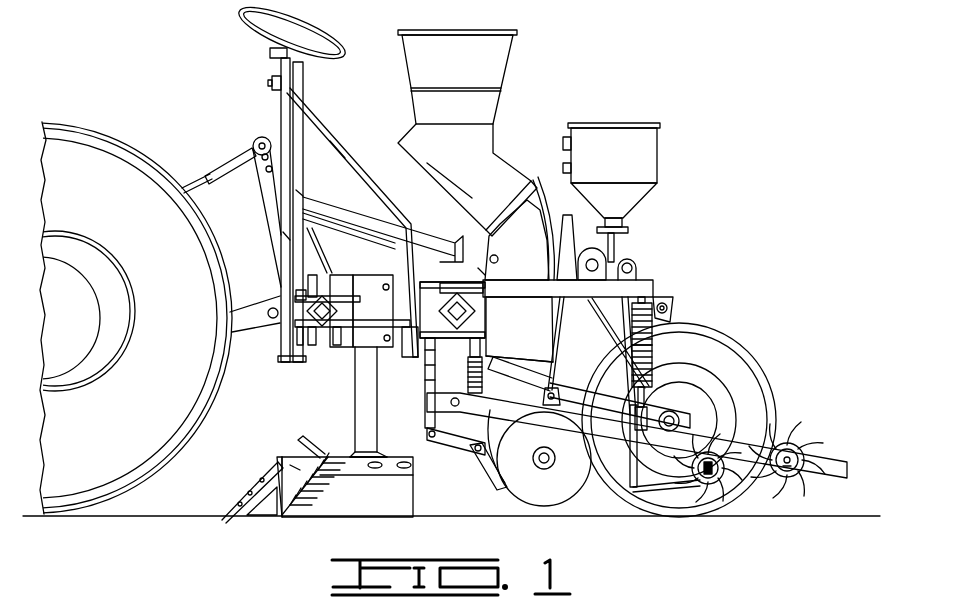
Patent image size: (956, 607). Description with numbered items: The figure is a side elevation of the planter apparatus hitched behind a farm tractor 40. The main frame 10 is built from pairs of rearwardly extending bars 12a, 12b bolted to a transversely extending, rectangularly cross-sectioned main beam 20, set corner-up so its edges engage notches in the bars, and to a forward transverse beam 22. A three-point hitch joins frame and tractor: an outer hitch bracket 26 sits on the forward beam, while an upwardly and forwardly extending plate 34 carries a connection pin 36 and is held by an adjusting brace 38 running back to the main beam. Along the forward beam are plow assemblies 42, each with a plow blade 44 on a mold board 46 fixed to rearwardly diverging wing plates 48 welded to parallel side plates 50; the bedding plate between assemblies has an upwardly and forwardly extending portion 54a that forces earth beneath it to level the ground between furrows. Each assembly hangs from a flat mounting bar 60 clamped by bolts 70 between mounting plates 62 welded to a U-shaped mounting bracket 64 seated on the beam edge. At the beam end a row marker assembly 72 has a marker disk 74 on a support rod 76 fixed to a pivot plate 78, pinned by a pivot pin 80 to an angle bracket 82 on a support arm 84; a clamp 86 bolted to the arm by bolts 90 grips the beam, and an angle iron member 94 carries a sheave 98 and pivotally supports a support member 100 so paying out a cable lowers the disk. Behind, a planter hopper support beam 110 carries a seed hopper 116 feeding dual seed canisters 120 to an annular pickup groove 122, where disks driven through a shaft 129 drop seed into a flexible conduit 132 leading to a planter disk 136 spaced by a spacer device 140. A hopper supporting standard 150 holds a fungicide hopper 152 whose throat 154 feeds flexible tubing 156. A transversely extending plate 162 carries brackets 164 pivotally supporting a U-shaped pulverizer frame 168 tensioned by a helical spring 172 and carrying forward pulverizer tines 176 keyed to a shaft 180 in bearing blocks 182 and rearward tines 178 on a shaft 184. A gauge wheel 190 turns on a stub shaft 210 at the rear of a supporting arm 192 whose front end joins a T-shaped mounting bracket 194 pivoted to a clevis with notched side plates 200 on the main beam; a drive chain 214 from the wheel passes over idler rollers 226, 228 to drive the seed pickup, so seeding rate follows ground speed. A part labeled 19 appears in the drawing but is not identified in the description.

The main frame 10 is at (404, 277).
The rearwardly extending bar 12a is at (420, 301).
The rearwardly extending bar 12b is at (420, 340).
The seed delivery tube 19 is at (478, 272).
The main beam 20 is at (489, 293).
The forward transverse beam 22 is at (322, 330).
The outer hitch bracket 26 is at (277, 331).
The plate 34 is at (273, 211).
The connection pin 36 is at (252, 145).
The adjusting brace 38 is at (325, 204).
The farm tractor 40 is at (104, 117).
The plow assembly 42 is at (389, 450).
The plow blade 44 is at (223, 519).
The mold board 46 is at (267, 521).
The wing plate 48 is at (298, 466).
The side plate 50 is at (382, 505).
The upwardly and forwardly extending portion 54a is at (317, 450).
The mounting bar 60 is at (357, 393).
The mounting plate 62 is at (374, 295).
The U-shaped mounting bracket 64 is at (340, 270).
The bolt 70 is at (387, 342).
The row marker assembly 72 is at (323, 117).
The marker disk 74 is at (312, 38).
The support rod 76 is at (336, 148).
The pivot plate 78 is at (416, 360).
The pivot pin 80 is at (433, 372).
The angle bracket 82 is at (407, 322).
The support arm 84 is at (368, 348).
The clamp 86 is at (318, 250).
The bolt 90 is at (304, 296).
The angle iron member 94 is at (296, 193).
The sheave 98 is at (271, 72).
The support member 100 is at (283, 237).
The planter hopper support beam 110 is at (546, 256).
The seed hopper 116 is at (470, 68).
The seed canister 120 is at (482, 150).
The annular pickup groove 122 is at (540, 178).
The shaft 129 is at (497, 262).
The flexible conduit 132 is at (537, 208).
The planter disk 136 is at (530, 491).
The spacer device 140 is at (477, 468).
The hopper supporting standard 150 is at (563, 152).
The fungicide hopper 152 is at (600, 158).
The throat 154 is at (637, 207).
The flexible tubing 156 is at (601, 381).
The transversely extending plate 162 is at (498, 357).
The bracket 164 is at (420, 428).
The pulverizer frame 168 is at (823, 463).
The helical spring 172 is at (655, 347).
The pulverizer tines 176 is at (707, 485).
The pulverizer tines 178 is at (805, 493).
The shaft 180 is at (683, 487).
The bearing block 182 is at (700, 494).
The shaft 184 is at (775, 490).
The gauge wheel 190 is at (697, 347).
The gauge wheel supporting arm 192 is at (563, 377).
The T-shaped mounting bracket 194 is at (484, 377).
The side plate 200 is at (493, 333).
The stub shaft 210 is at (670, 415).
The drive chain 214 is at (594, 312).
The idler roller 226 is at (632, 260).
The idler roller 228 is at (664, 300).